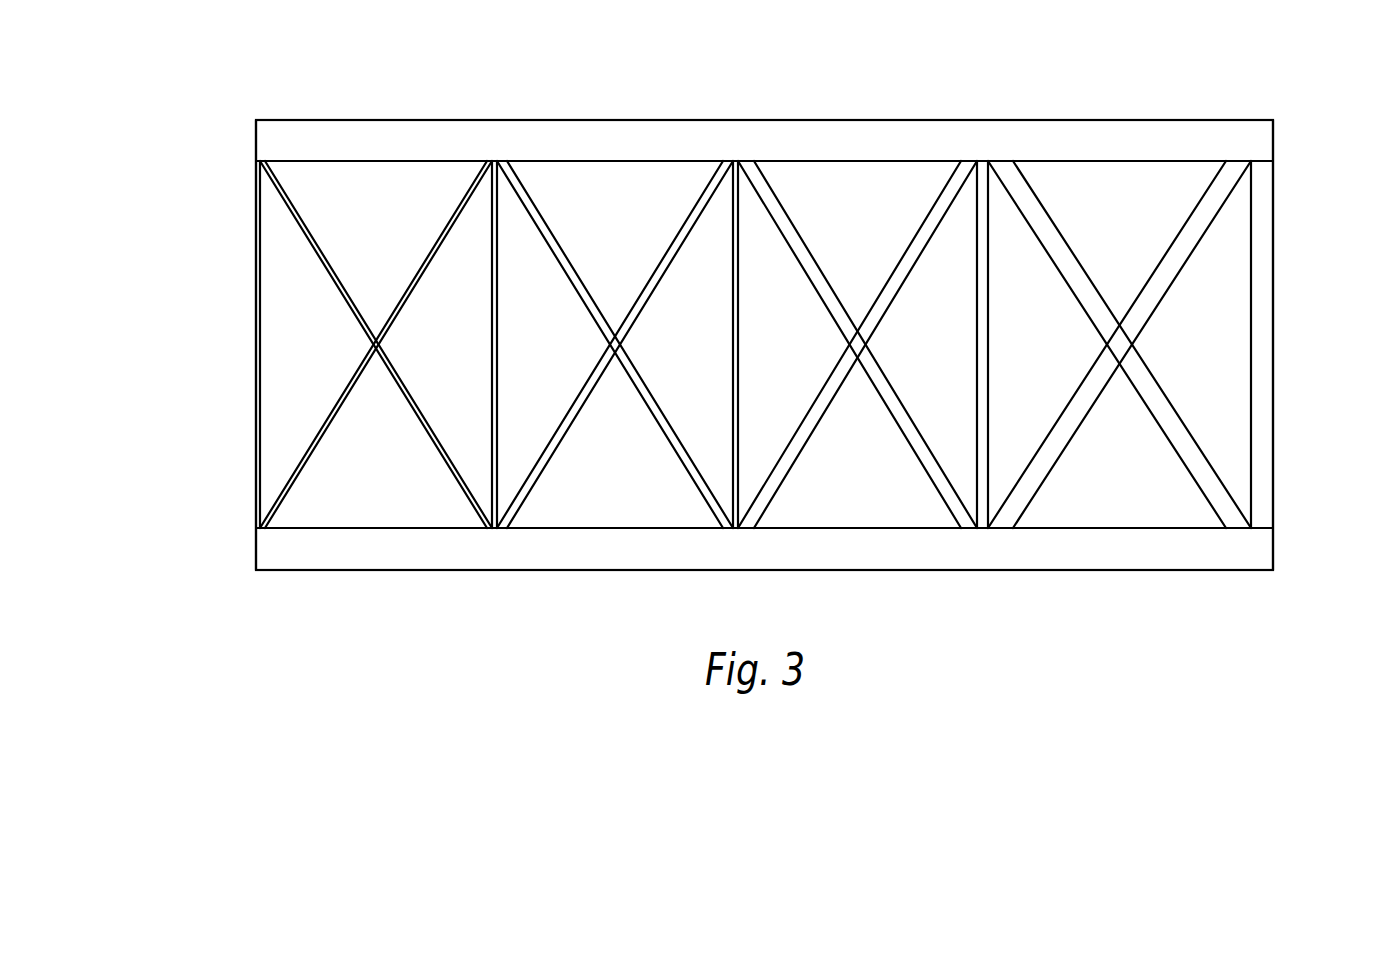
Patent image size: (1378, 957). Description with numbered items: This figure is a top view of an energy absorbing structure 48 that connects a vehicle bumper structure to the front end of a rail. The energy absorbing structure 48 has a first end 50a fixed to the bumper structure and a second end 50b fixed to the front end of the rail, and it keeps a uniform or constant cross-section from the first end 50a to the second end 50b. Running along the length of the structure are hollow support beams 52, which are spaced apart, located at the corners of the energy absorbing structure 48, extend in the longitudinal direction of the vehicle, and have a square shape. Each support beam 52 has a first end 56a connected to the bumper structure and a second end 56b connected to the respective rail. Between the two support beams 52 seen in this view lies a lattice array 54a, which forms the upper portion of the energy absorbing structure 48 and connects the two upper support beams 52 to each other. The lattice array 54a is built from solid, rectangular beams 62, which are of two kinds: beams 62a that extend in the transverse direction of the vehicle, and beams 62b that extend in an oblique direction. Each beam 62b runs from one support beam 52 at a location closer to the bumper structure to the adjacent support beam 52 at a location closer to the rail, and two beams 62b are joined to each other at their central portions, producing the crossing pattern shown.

The energy absorbing structure 48 is at (474, 597).
The first end 50a is at (230, 392).
The second end 50b is at (1281, 331).
The hollow support beam 52 is at (640, 135).
The lattice array 54a is at (254, 268).
The first end of support beam 56a is at (397, 137).
The second end of support beam 56b is at (1195, 133).
The beam 62 is at (717, 201).
The beam 62a is at (496, 300).
The beam 62b is at (315, 237).